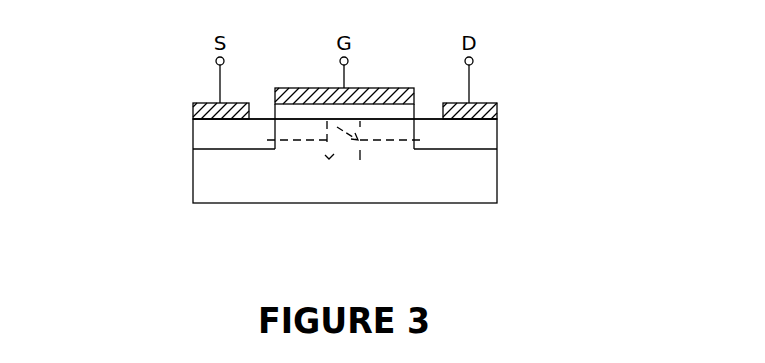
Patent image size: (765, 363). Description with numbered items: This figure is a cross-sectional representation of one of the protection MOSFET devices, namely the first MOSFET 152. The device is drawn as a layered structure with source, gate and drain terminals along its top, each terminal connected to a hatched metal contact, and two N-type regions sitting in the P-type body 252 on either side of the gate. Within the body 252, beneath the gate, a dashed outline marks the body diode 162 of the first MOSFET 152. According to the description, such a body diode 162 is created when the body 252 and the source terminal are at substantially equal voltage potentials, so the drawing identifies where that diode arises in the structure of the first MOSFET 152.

The first MOSFET 152 is at (284, 176).
The body 252 is at (247, 192).
The body diode 162 is at (347, 145).